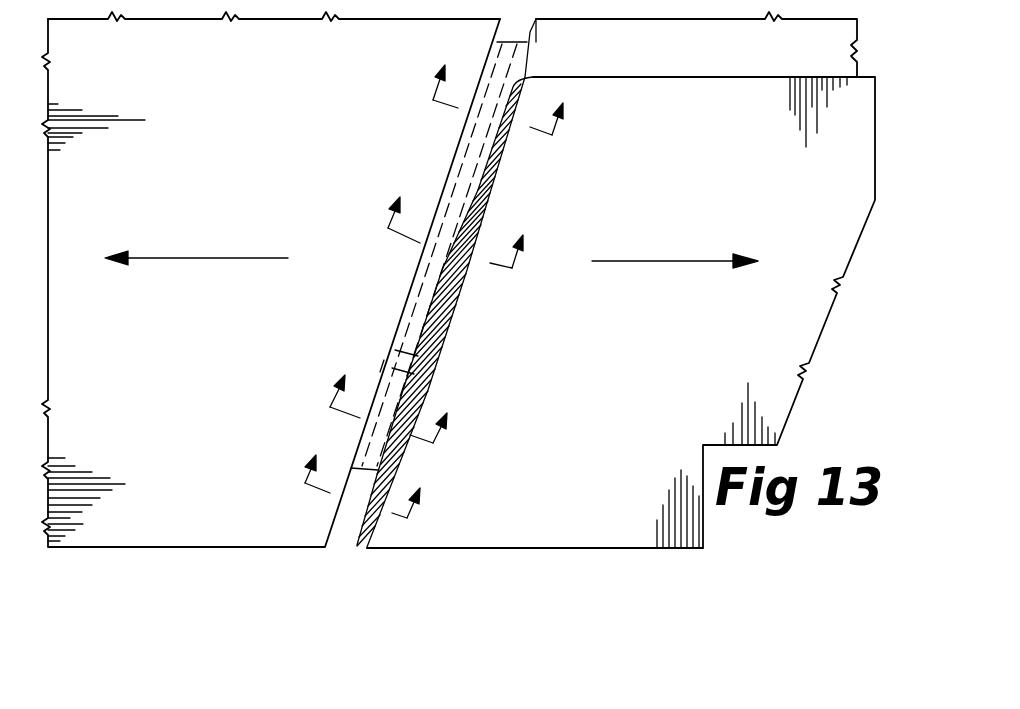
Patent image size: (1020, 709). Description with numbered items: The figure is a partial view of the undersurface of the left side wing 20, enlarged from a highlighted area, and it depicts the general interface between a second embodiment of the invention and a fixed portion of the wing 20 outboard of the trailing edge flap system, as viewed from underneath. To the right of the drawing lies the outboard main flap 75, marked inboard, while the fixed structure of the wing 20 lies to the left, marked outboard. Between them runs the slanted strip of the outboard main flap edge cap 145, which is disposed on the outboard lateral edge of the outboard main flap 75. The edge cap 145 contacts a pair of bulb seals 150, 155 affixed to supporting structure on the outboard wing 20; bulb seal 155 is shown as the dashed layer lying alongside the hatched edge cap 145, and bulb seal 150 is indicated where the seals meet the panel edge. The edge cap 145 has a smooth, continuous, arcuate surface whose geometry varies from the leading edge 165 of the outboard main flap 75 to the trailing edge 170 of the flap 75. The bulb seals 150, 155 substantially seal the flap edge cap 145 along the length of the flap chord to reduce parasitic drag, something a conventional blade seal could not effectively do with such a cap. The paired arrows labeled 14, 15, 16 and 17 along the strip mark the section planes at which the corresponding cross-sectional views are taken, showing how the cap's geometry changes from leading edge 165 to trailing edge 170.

The section line for FIG. 14 is at (513, 83).
The section line for FIG. 15 is at (467, 216).
The section line for FIG. 16 is at (397, 393).
The section line for FIG. 17 is at (374, 470).
The wing 20 is at (195, 306).
The outboard main flap 75 is at (695, 353).
The outboard main flap edge cap 145 is at (503, 176).
The bulb seal 150 is at (392, 368).
The bulb seal 155 is at (482, 145).
The leading edge 165 is at (708, 78).
The trailing edge 170 is at (547, 545).